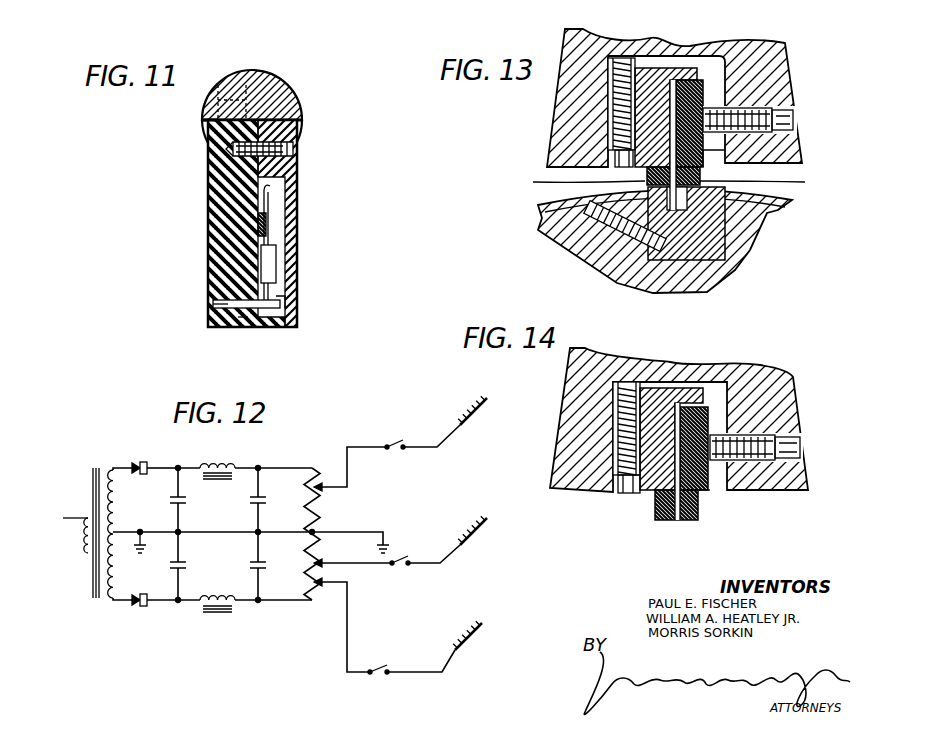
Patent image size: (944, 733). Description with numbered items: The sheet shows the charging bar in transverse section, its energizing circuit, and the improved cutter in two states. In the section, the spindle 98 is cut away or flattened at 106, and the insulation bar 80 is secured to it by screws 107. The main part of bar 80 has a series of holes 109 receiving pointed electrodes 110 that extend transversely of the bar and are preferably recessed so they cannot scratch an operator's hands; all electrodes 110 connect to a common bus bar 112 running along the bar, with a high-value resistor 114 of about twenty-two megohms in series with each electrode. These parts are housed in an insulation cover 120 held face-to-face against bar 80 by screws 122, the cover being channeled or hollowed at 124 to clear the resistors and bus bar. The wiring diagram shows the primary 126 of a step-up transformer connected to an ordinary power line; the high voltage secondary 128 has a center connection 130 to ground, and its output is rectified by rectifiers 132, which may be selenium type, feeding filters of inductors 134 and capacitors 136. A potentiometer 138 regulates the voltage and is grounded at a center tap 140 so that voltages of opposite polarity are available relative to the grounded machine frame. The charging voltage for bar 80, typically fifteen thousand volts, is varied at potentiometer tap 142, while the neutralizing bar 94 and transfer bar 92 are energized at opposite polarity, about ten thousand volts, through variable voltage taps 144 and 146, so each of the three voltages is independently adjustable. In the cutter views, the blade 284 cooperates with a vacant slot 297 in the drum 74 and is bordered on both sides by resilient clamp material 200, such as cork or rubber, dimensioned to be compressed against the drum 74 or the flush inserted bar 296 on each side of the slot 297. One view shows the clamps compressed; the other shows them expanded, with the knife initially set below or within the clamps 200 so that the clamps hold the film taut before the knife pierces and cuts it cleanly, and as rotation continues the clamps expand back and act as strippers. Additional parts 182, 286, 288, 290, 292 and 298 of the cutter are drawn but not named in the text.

In FIG. 13, the drum 74 is at (760, 224).
In FIG. 11, the insulation bar 80 is at (212, 226).
In FIG. 12, the insulation bar 80 is at (477, 420).
In FIG. 12, the transfer bar 92 is at (470, 648).
In FIG. 12, the neutralizing bar 94 is at (458, 542).
In FIG. 11, the spindle 98 is at (262, 72).
In FIG. 11, the flattened portion of spindle 106 is at (212, 121).
In FIG. 11, the screws 107 is at (236, 88).
In FIG. 11, the holes 109 is at (228, 304).
In FIG. 11, the pointed electrodes 110 is at (243, 318).
In FIG. 12, the pointed electrodes 110 is at (73, 537).
In FIG. 11, the bus bar 112 is at (257, 228).
In FIG. 11, the resistor 114 is at (270, 270).
In FIG. 11, the insulation cover 120 is at (294, 297).
In FIG. 11, the screws 122 is at (302, 154).
In FIG. 11, the channel 124 is at (282, 232).
In FIG. 12, the primary 126 is at (84, 554).
In FIG. 12, the high voltage secondary 128 is at (143, 534).
In FIG. 12, the center connection 130 is at (124, 534).
In FIG. 12, the rectifiers 132 is at (137, 462).
In FIG. 12, the inductors 134 is at (226, 460).
In FIG. 12, the capacitors 136 is at (241, 534).
In FIG. 12, the potentiometer 138 is at (308, 478).
In FIG. 12, the center tap 140 is at (358, 531).
In FIG. 12, the potentiometer tap 142 is at (319, 484).
In FIG. 12, the variable voltage tap 144 is at (323, 562).
In FIG. 12, the variable voltage tap 146 is at (318, 592).
In FIG. 13, the housing block 182 is at (720, 55).
In FIG. 13, the resilient clamp material 200 is at (665, 180).
In FIG. 14, the resilient clamp material 200 is at (701, 496).
In FIG. 13, the blade 284 is at (686, 106).
In FIG. 14, the blade 284 is at (659, 506).
In FIG. 13, the support block 286 is at (656, 78).
In FIG. 13, the recess 288 is at (733, 63).
In FIG. 13, the adjusting screw 290 is at (784, 117).
In FIG. 13, the spring coil 292 is at (662, 20).
In FIG. 13, the inserted bar 296 is at (725, 240).
In FIG. 13, the vacant slot 297 is at (697, 196).
In FIG. 13, the set screw 298 is at (628, 238).